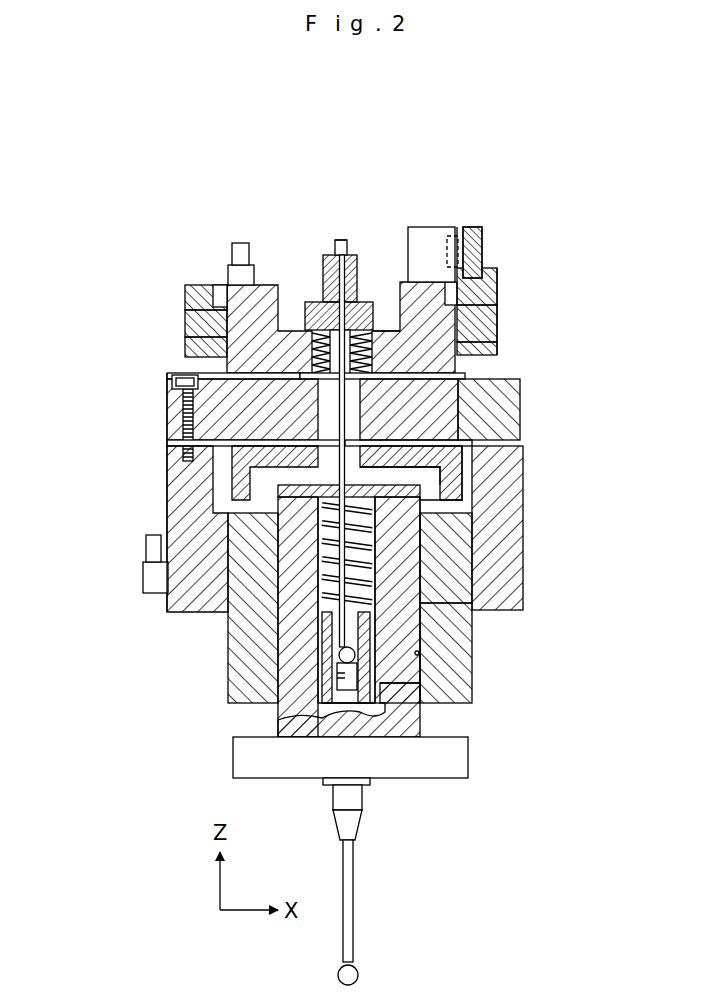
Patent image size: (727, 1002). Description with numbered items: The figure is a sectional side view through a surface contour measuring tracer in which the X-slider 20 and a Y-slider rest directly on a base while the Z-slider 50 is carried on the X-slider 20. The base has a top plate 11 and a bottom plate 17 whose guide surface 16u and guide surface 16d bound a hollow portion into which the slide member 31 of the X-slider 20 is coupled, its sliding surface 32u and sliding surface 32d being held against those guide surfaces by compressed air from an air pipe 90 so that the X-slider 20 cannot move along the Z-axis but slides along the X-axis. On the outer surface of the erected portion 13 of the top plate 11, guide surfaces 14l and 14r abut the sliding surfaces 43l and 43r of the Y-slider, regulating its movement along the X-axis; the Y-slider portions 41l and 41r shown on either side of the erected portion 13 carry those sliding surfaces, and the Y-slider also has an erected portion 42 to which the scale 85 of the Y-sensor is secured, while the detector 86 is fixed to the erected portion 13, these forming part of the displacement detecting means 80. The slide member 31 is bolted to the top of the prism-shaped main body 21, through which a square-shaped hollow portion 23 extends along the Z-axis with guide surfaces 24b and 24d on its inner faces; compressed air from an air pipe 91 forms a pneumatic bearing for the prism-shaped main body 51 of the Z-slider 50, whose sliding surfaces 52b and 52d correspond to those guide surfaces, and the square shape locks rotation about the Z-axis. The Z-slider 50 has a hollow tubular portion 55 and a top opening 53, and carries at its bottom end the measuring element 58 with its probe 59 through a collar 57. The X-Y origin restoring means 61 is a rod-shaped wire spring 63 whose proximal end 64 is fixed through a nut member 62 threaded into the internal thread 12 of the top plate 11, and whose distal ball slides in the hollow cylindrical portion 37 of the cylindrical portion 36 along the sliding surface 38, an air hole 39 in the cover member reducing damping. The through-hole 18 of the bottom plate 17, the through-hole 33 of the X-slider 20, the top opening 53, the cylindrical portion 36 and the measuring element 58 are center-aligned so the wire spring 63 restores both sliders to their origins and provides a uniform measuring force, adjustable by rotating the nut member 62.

The top plate 11 is at (430, 366).
The internal thread 12 is at (378, 331).
The erected portion 13 is at (222, 300).
The guide surface 14l is at (188, 300).
The guide surface 14r is at (488, 322).
The guide surface 16u is at (425, 376).
The guide surface 16d is at (515, 445).
The bottom plate 17 is at (435, 457).
The through-hole 18 is at (395, 478).
The X-slider 20 is at (67, 433).
The main body 21 is at (185, 510).
The hollow portion 23 is at (400, 582).
The guide surface 24b is at (278, 627).
The guide surface 24d is at (435, 680).
The slide member 31 is at (190, 412).
The sliding surface 32u is at (255, 375).
The sliding surface 32d is at (232, 442).
The through-hole 33 is at (185, 397).
The cylindrical portion 36 is at (335, 665).
The hollow cylindrical portion 37 is at (415, 712).
The sliding surface 38 is at (337, 682).
The air hole 39 is at (280, 722).
The left stopper 41l is at (188, 320).
The right stopper 41r is at (495, 332).
The erected portion 42 is at (492, 297).
The sliding surface 43l is at (188, 344).
The sliding surface 43r is at (488, 347).
The Z-slider 50 is at (257, 712).
The main body 51 is at (408, 632).
The sliding surface 52b is at (283, 650).
The sliding surface 52d is at (419, 653).
The top opening 53 is at (400, 490).
The hollow tubular portion 55 is at (370, 548).
The collar 57 is at (470, 758).
The measuring element 58 is at (352, 896).
The probe 59 is at (352, 973).
The X-Y origin restoring means 61 is at (300, 213).
The nut member 62 is at (346, 262).
The wire spring 63 is at (306, 312).
The proximal end 64 is at (330, 300).
The displacement detecting means 80 is at (460, 194).
The scale 85 is at (476, 229).
The detector 86 is at (455, 237).
The air pipe 90 is at (232, 252).
The air pipe 91 is at (148, 548).